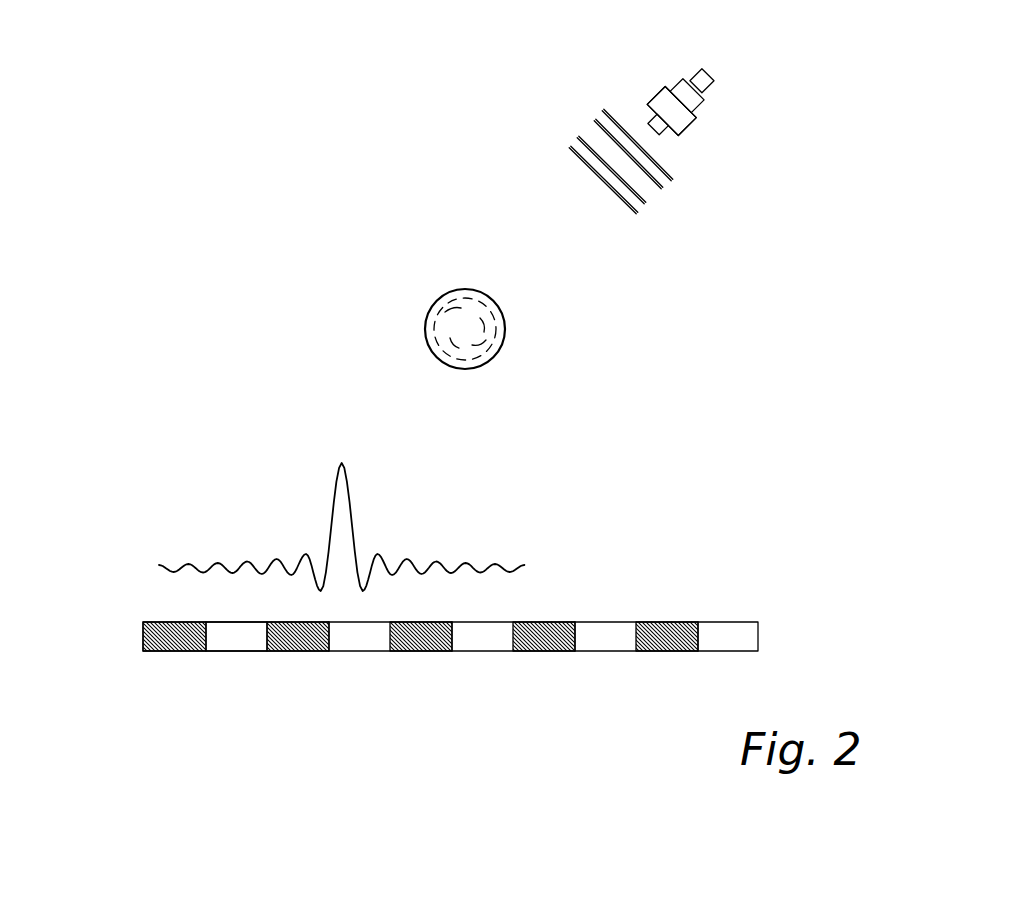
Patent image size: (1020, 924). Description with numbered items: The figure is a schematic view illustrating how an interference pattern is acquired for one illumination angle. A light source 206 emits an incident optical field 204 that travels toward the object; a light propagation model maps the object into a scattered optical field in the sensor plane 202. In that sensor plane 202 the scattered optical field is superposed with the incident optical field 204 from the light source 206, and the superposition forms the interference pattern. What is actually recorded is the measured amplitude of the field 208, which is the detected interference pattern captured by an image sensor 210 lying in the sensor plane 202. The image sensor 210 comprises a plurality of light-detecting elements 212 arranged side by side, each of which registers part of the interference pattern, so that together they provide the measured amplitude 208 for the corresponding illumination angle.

The sensor plane 202 is at (463, 621).
The incident optical field 204 is at (597, 118).
The light source 206 is at (703, 102).
The measured amplitude of the field 208 is at (350, 487).
The image sensor 210 is at (143, 640).
The light-detecting elements 212 is at (240, 635).